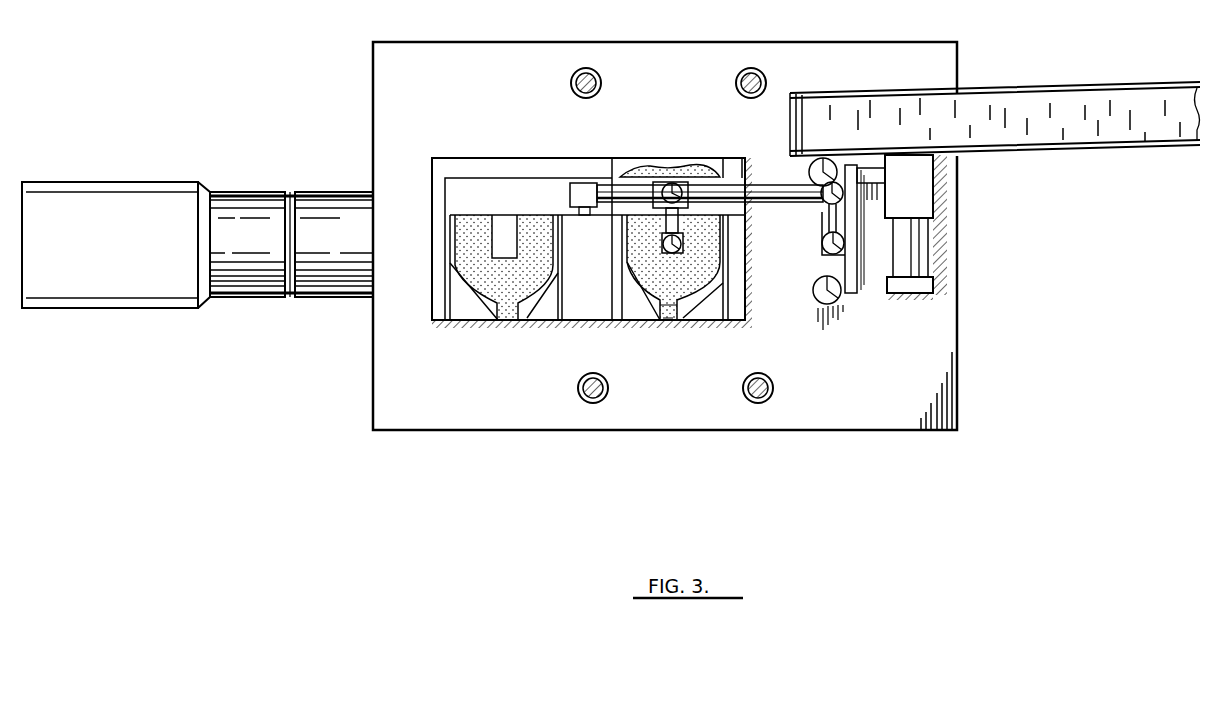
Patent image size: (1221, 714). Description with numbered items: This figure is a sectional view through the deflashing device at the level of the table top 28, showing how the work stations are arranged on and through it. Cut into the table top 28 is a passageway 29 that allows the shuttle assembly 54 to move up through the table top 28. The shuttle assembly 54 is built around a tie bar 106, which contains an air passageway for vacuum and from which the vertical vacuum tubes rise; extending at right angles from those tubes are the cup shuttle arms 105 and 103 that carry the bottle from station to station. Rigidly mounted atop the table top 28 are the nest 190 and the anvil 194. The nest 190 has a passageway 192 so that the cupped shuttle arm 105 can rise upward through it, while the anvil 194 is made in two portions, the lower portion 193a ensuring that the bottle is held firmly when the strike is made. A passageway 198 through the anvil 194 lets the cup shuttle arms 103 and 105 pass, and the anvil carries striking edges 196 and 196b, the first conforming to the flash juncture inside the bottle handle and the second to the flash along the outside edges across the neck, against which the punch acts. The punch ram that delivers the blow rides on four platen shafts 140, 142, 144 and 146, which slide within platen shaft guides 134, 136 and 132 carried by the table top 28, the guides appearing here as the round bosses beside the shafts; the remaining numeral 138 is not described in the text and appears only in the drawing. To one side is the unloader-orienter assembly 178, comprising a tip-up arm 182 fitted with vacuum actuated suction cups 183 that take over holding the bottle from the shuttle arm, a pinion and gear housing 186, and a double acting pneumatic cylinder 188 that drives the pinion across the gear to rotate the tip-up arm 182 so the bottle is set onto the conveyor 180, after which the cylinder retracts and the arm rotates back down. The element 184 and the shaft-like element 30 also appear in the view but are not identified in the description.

The table top 28 is at (434, 402).
The passageway 29 is at (528, 200).
The shaft 30 is at (248, 258).
The shuttle assembly 54 is at (665, 185).
The cup shuttle arm 103 is at (822, 218).
The cup shuttle arm 105 is at (666, 217).
The tie bar 106 is at (772, 192).
The platen shaft guide 132 is at (768, 399).
The platen shaft guide 134 is at (600, 399).
The platen shaft guide 136 is at (752, 68).
The bolt 138 is at (586, 68).
The platen shaft 140 is at (607, 386).
The platen shaft 142 is at (598, 80).
The platen shaft 144 is at (764, 89).
The platen shaft 146 is at (772, 386).
The unloader-orienter assembly 178 is at (868, 228).
The conveyor 180 is at (1028, 112).
The tip-up arm 182 is at (857, 294).
The suction cup 183 is at (818, 158).
The spring 184 is at (868, 167).
The pinion and gear housing 186 is at (922, 181).
The double acting pneumatic cylinder 188 is at (920, 285).
The nest 190 is at (505, 300).
The passageway 192 is at (495, 237).
The lower portion 193a is at (668, 168).
The anvil 194 is at (673, 312).
The striking edge 196 is at (652, 262).
The striking edge 196b is at (652, 312).
The passageway 198 is at (684, 233).